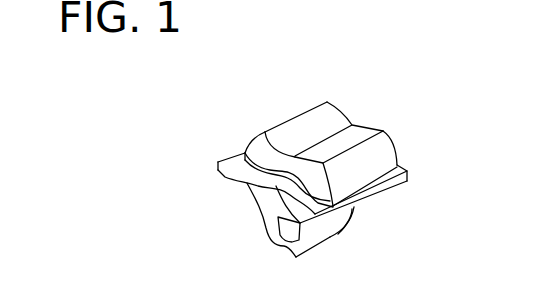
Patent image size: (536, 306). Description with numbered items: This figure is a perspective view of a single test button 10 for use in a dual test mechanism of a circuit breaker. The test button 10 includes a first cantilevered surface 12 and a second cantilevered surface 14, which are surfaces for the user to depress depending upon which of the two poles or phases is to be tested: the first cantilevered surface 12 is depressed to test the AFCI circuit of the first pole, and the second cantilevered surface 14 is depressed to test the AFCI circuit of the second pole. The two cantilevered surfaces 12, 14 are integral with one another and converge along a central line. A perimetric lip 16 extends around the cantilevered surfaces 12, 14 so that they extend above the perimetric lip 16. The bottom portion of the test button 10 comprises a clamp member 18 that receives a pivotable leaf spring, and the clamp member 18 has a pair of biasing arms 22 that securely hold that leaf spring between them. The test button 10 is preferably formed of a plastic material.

The test button 10 is at (306, 93).
The first cantilevered surface 12 is at (297, 122).
The second cantilevered surface 14 is at (365, 128).
The perimetric lip 16 is at (225, 177).
The clamp member 18 is at (343, 243).
The biasing arms 22 is at (264, 218).